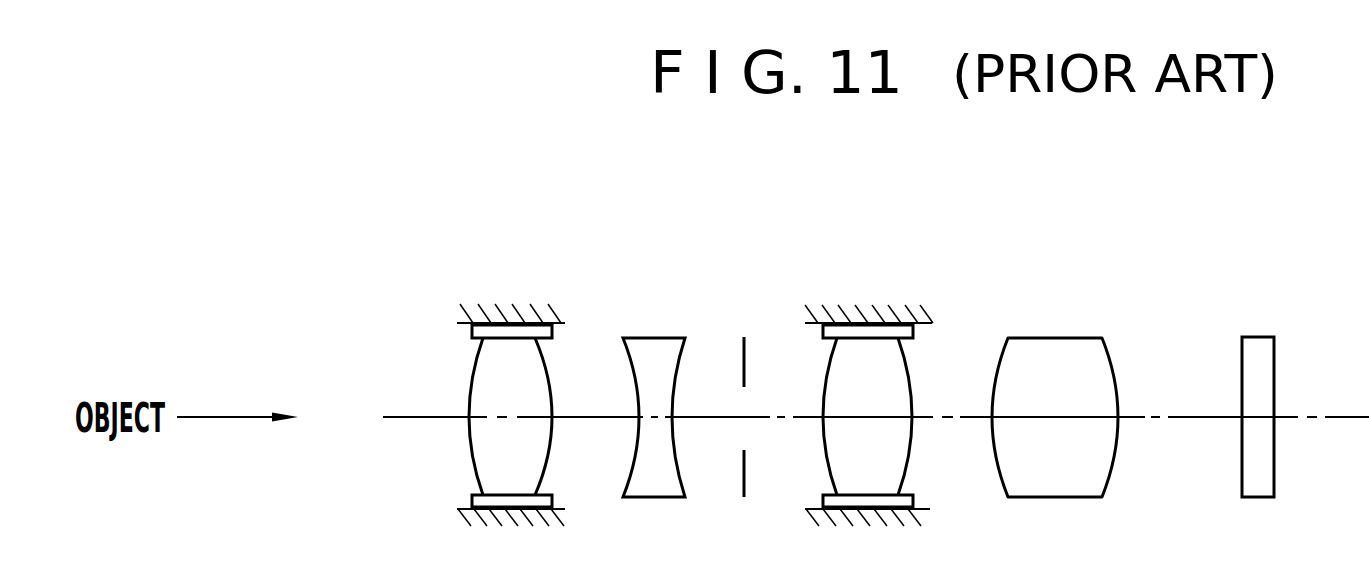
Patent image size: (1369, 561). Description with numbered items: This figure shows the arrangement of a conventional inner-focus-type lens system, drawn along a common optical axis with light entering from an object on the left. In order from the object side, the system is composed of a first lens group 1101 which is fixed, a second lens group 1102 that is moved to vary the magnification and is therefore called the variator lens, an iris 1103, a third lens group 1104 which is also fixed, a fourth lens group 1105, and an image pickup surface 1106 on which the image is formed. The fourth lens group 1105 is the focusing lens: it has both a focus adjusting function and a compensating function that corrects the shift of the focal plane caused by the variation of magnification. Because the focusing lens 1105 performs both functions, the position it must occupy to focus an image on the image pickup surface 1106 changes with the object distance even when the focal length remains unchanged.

The first lens group 1101 is at (507, 320).
The second lens group 1102 is at (655, 347).
The iris 1103 is at (744, 339).
The third lens group 1104 is at (868, 318).
The fourth lens group 1105 is at (1048, 337).
The image pickup surface 1106 is at (1258, 337).